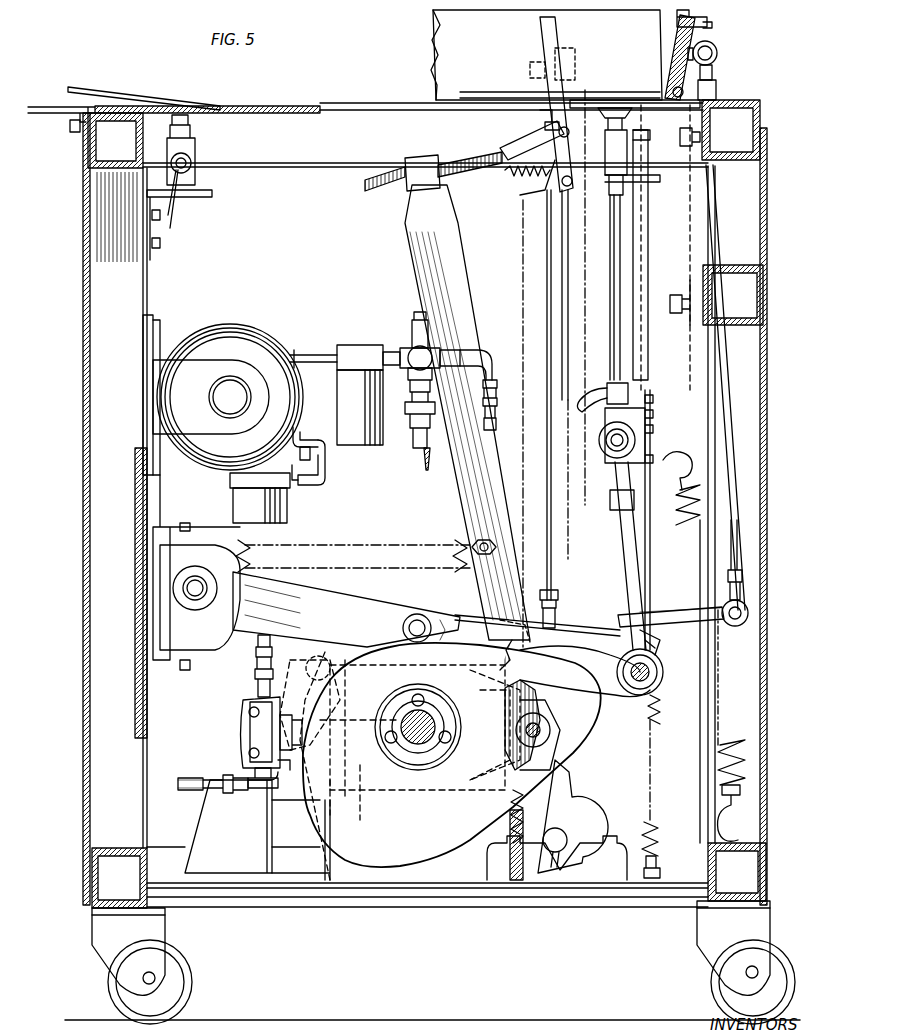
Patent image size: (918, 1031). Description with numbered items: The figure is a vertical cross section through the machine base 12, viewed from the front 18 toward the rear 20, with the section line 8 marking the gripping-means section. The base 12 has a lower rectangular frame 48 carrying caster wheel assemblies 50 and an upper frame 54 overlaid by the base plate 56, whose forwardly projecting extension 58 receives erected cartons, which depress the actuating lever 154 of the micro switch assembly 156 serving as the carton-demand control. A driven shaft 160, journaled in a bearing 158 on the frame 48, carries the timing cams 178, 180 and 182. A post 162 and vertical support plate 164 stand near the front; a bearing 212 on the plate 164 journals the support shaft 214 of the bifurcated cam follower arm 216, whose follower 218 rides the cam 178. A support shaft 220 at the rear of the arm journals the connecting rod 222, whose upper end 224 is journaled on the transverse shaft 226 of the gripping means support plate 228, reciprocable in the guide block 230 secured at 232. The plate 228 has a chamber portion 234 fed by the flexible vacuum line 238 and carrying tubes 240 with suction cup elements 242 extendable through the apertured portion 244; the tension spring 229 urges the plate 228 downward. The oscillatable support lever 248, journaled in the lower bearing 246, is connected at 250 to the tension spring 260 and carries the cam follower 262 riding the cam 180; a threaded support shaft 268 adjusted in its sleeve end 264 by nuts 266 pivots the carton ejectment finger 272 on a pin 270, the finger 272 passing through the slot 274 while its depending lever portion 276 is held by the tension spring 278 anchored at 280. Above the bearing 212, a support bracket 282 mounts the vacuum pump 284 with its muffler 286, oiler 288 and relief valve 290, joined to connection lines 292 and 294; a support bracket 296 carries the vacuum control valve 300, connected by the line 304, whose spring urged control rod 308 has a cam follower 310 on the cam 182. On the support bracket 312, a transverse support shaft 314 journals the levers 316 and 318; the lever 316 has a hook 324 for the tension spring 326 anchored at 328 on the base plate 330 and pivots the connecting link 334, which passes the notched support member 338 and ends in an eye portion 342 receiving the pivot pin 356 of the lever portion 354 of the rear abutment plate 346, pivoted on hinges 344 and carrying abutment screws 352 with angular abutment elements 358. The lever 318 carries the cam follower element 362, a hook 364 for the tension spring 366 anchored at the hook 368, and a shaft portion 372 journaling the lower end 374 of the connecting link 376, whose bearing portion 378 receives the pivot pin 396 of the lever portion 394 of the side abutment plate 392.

The machine base 12 is at (410, 905).
The front of the machine 18 is at (83, 448).
The right side wall 20 is at (767, 418).
The lower rectangular frame 48 is at (92, 887).
The caster wheel assemblies 50 is at (100, 930).
The upper frame 54 is at (337, 145).
The base plate 56 is at (294, 104).
The forwardly projecting extension 58 is at (42, 105).
The section line 8 is at (585, 90).
The actuating lever 154 is at (140, 95).
The micro switch assembly 156 is at (196, 150).
The bearing 158 is at (472, 790).
The driven shaft 160 is at (425, 805).
The post 162 is at (100, 487).
The vertical support plate 164 is at (135, 530).
The cam 178 is at (430, 690).
The control cam 180 is at (540, 700).
The control cam 182 is at (350, 805).
The rearwardly extending bearing 212 is at (170, 544).
The support shaft 214 is at (172, 588).
The bifurcated cam follower arm 216 is at (372, 610).
The cam follower 218 is at (420, 612).
The transverse support shaft 220 is at (650, 672).
The connecting rod 222 is at (626, 550).
The upper end 224 is at (636, 437).
The transverse shaft 226 is at (630, 440).
The gripping means support plate 228 is at (650, 400).
The tension spring 229 is at (700, 495).
The guide block 230 is at (665, 247).
The securing point 232 is at (700, 135).
The chamber portion 234 is at (628, 385).
The flexible vacuum line 238 is at (590, 390).
The tubes 240 is at (620, 238).
The suction cup elements 242 is at (620, 108).
The apertured portion 244 is at (648, 110).
The lower bearing 246 is at (586, 800).
The oscillatable support lever 248 is at (540, 240).
The intermediate connection 250 is at (472, 540).
The tension spring 260 is at (260, 555).
The cam follower 262 is at (552, 724).
The upper transverse sleeve end 264 is at (420, 185).
The nuts 266 is at (408, 165).
The threaded support shaft 268 is at (466, 165).
The pin 270 is at (556, 130).
The carton ejectment finger 272 is at (540, 37).
The elongated slot 274 is at (380, 102).
The depending lever portion 276 is at (530, 192).
The tension spring 278 is at (520, 175).
The anchor point 280 is at (532, 140).
The support bracket 282 is at (155, 335).
The vacuum pump 284 is at (235, 327).
The muffler 286 is at (290, 508).
The oiler 288 is at (345, 345).
The relief valve 290 is at (405, 345).
The flexible connection line 292 is at (424, 448).
The flexible connection line 294 is at (488, 348).
The support bracket 296 is at (210, 812).
The vacuum control valve 300 is at (250, 726).
The line 304 is at (200, 770).
The spring urged control rod 308 is at (310, 760).
The cam follower 310 is at (318, 786).
The support bracket 312 is at (323, 858).
The transverse support shaft 314 is at (318, 655).
The lever 316 is at (662, 615).
The lever 318 is at (508, 618).
The hook 324 is at (656, 650).
The tension spring 326 is at (662, 708).
The anchor point 328 is at (660, 862).
The base plate 330 is at (625, 890).
The connecting link 334 is at (718, 232).
The intermediate support member 338 is at (763, 290).
The eye portion 342 is at (717, 50).
The support hinges 344 is at (716, 90).
The rear abutment plate 346 is at (712, 72).
The abutment screws 352 is at (708, 22).
The lever portion 354 is at (717, 62).
The lateral pivot pin 356 is at (712, 40).
The angular abutment element 358 is at (670, 40).
The cam follower element 362 is at (486, 612).
The depending hook 364 is at (565, 658).
The tension spring 366 is at (548, 885).
The hook 368 is at (500, 885).
The shaft portion 372 is at (555, 638).
The lower end 374 is at (560, 618).
The connecting link 376 is at (542, 265).
The bearing portion 378 is at (530, 92).
The side abutment plate 392 is at (433, 40).
The lever portion 394 is at (570, 58).
The pivot pin 396 is at (530, 66).